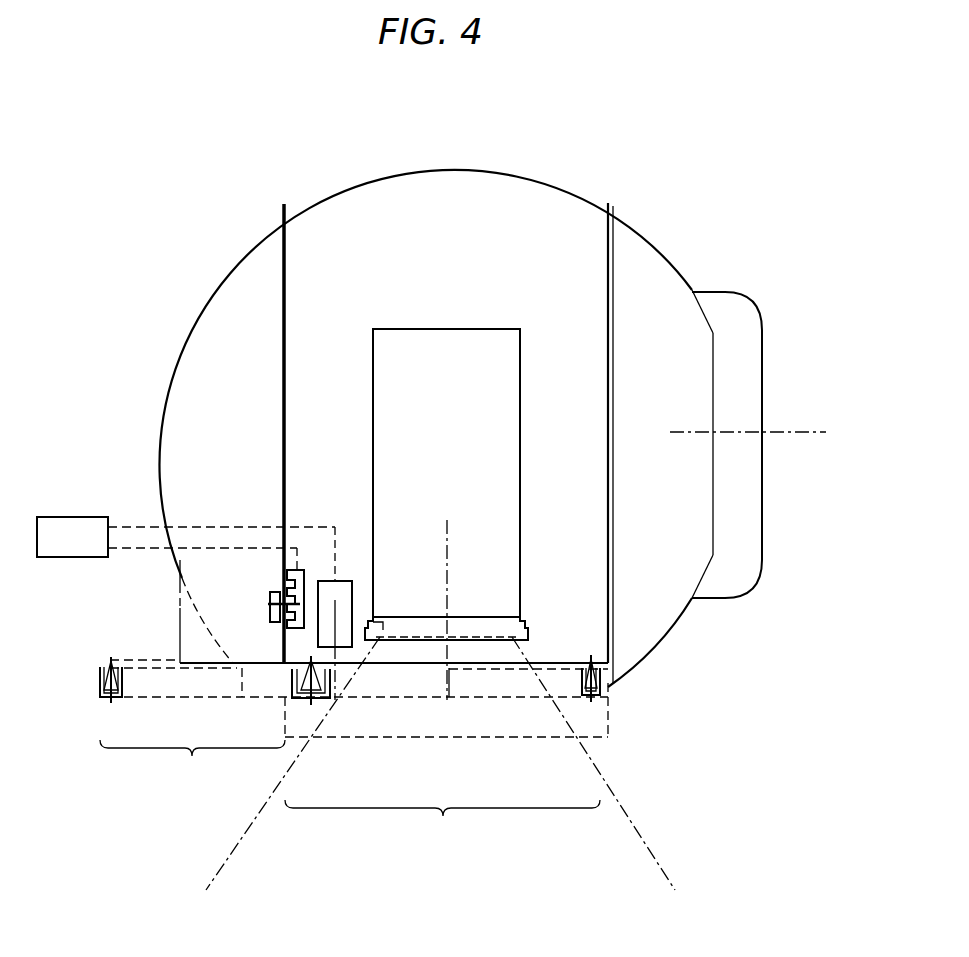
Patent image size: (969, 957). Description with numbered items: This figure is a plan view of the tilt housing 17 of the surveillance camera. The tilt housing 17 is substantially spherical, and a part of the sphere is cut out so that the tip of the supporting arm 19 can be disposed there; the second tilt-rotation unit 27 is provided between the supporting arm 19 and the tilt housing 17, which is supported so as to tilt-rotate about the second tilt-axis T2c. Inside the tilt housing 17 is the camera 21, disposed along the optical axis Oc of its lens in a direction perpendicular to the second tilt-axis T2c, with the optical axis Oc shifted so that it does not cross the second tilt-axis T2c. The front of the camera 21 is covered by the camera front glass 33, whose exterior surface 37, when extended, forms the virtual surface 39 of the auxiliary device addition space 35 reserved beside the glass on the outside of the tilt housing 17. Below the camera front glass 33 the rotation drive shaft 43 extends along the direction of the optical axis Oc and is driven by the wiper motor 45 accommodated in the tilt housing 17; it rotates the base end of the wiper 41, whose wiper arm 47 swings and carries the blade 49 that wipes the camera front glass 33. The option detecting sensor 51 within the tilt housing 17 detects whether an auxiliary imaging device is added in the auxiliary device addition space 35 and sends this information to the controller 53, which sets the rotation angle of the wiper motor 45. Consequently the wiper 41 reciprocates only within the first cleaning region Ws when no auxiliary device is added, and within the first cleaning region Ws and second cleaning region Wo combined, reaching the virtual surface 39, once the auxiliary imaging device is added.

The tilt housing 17 is at (405, 157).
The supporting arm 19 is at (722, 292).
The camera 21 is at (476, 330).
The second tilt-rotation unit 27 is at (609, 250).
The camera front glass 33 is at (565, 668).
The auxiliary device addition space 35 is at (176, 618).
The exterior surface 37 is at (506, 665).
The virtual surface 39 is at (190, 664).
The wiper 41 is at (303, 703).
The rotation drive shaft 43 is at (335, 682).
The wiper motor 45 is at (353, 597).
The wiper arm 47 is at (100, 688).
The blade 49 is at (307, 658).
The option detecting sensor 51 is at (280, 604).
The controller 53 is at (72, 517).
The optical axis Oc is at (447, 553).
The second tilt-axis T2c is at (795, 437).
The second cleaning region Wo is at (192, 766).
The first cleaning region Ws is at (442, 823).